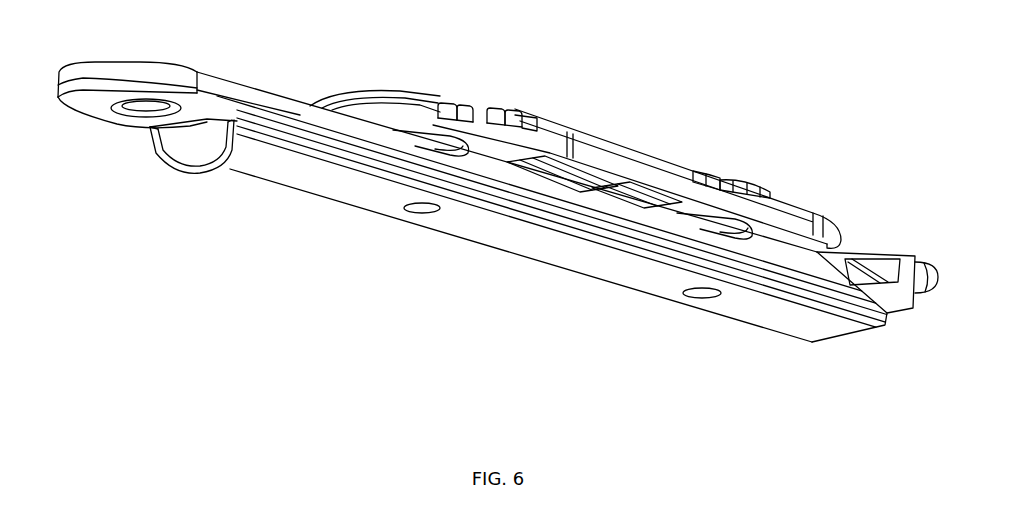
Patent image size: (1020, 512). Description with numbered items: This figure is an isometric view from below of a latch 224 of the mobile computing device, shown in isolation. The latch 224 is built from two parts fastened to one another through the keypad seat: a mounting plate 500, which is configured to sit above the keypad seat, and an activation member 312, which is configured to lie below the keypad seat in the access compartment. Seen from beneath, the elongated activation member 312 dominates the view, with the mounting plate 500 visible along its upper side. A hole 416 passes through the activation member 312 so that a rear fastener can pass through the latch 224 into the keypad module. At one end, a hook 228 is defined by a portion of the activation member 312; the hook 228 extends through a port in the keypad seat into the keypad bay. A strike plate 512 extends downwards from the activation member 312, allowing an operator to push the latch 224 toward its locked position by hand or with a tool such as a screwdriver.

The latch 224 is at (742, 134).
The hook 228 is at (917, 268).
The activation member 312 is at (282, 174).
The hole 416 is at (148, 105).
The mounting plate 500 is at (606, 142).
The strike plate 512 is at (176, 150).